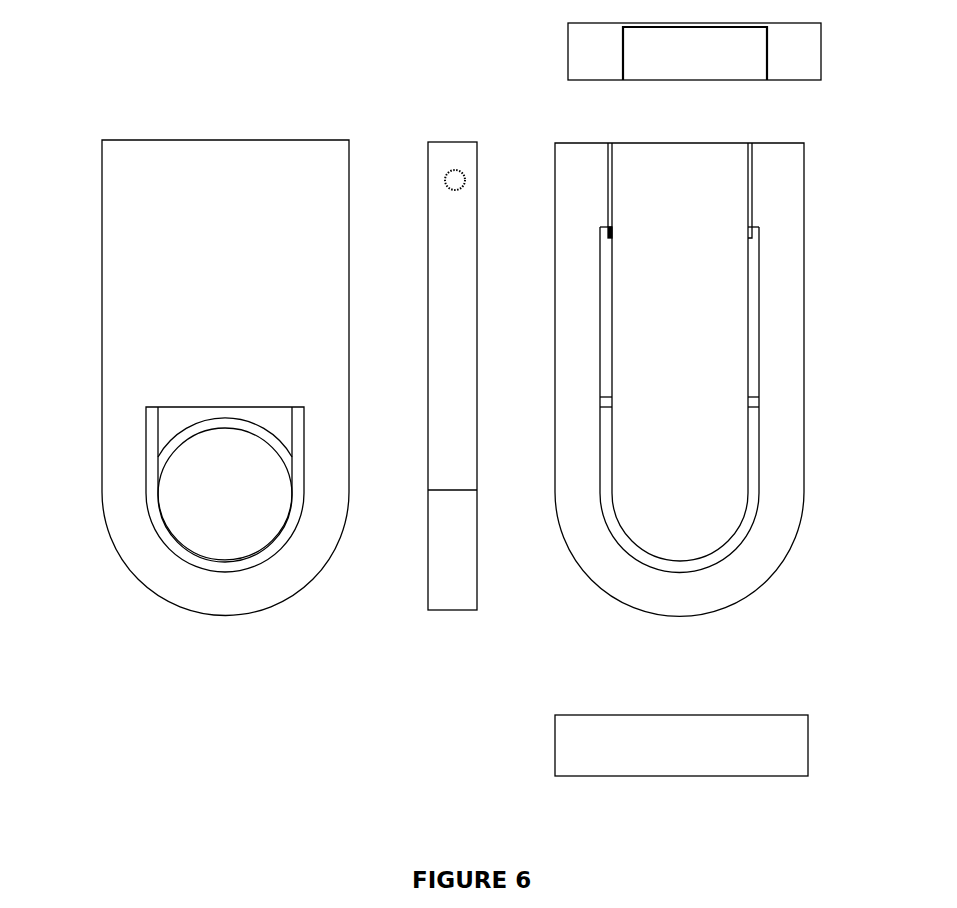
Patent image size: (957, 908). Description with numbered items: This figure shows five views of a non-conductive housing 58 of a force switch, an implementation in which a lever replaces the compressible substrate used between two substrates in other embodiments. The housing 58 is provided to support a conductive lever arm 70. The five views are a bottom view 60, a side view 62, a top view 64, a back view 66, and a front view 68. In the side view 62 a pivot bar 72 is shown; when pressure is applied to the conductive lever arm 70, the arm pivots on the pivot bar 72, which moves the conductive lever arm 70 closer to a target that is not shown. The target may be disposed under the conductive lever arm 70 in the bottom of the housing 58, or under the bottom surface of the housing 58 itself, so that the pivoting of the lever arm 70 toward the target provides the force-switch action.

The non-conductive housing 58 is at (316, 136).
The bottom view 60 is at (217, 160).
The side view 62 is at (447, 154).
The top view 64 is at (599, 545).
The back view 66 is at (578, 45).
The front view 68 is at (583, 757).
The conductive lever arm 70 is at (663, 317).
The pivot bar 72 is at (464, 170).